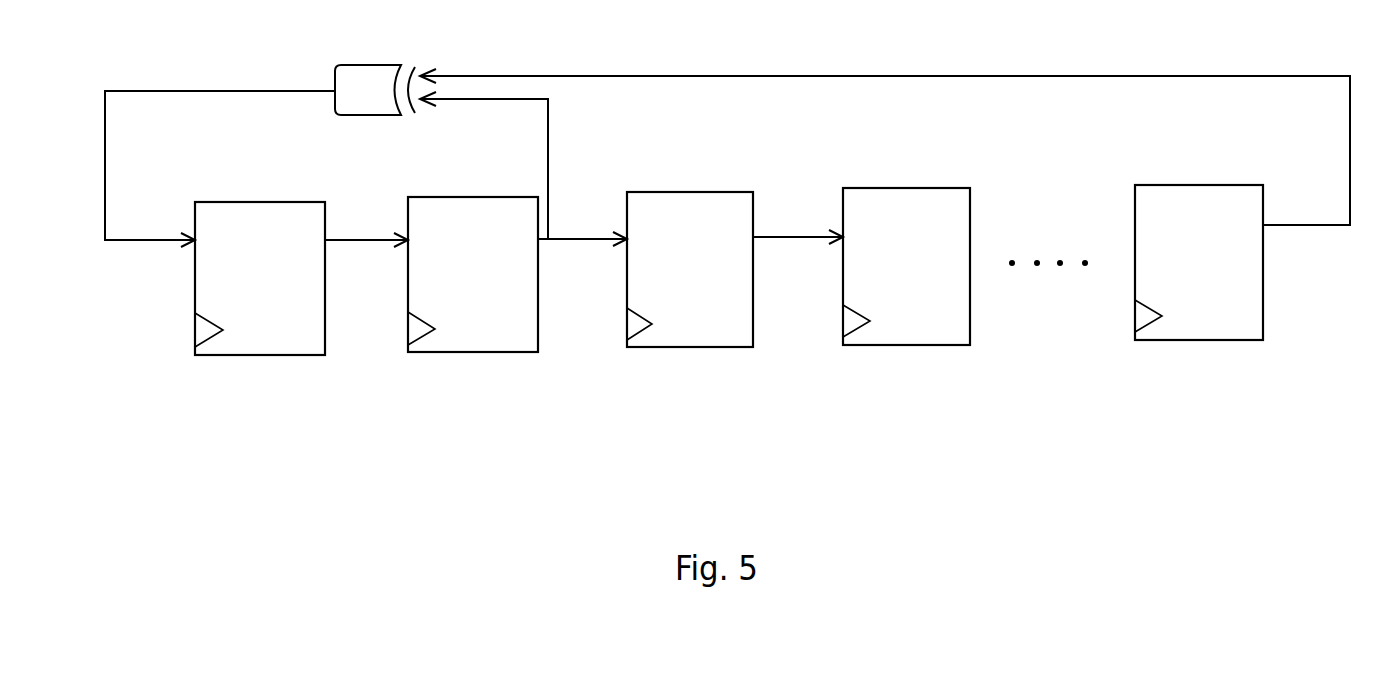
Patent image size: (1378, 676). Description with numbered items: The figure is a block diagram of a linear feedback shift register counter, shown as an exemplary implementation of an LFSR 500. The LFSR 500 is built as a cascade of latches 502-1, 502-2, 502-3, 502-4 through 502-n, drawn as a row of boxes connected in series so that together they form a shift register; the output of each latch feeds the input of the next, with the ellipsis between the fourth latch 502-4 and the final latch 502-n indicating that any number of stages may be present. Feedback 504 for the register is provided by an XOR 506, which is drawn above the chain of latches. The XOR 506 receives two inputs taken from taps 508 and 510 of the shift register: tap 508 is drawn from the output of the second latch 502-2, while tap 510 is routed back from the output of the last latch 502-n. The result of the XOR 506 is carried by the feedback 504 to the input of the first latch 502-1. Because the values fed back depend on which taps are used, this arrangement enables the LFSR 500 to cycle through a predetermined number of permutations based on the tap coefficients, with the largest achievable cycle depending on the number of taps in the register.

The LFSR 500 is at (1010, 414).
The latch 502-1 is at (260, 278).
The latch 502-2 is at (473, 274).
The latch 502-3 is at (690, 269).
The latch 502-4 is at (906, 266).
The latch 502-n is at (1199, 262).
The feedback 504 is at (220, 151).
The XOR 506 is at (375, 73).
The tap 508 is at (507, 165).
The tap 510 is at (885, 147).